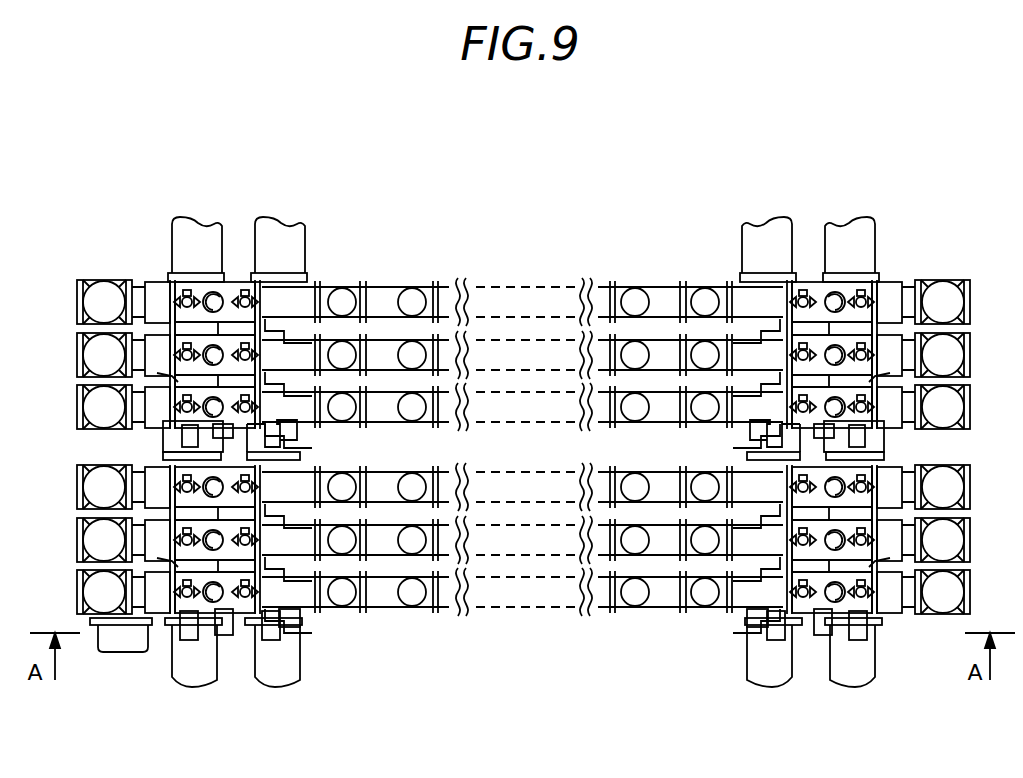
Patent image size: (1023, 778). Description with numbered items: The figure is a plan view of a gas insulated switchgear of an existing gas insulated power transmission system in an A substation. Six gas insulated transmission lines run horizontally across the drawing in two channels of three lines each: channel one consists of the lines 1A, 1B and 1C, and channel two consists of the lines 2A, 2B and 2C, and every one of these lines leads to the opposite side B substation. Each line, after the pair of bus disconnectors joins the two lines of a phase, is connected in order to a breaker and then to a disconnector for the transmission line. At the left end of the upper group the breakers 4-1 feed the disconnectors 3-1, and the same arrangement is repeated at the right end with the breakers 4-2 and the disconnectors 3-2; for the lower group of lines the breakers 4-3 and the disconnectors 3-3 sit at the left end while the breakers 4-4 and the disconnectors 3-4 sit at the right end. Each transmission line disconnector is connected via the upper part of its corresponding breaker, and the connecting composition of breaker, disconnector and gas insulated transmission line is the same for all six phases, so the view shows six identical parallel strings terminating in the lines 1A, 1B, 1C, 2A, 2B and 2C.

The line 1A is at (492, 288).
The line 1B is at (540, 350).
The line 1C is at (548, 410).
The line 2A is at (490, 473).
The line 2B is at (488, 550).
The line 2C is at (547, 597).
The disconnector for a transmission line 3-1 is at (221, 290).
The holding unit 3-2 is at (820, 288).
The holding unit 3-3 is at (216, 600).
The holding unit 3-4 is at (830, 602).
The breaker 4-1 is at (112, 282).
The roller unit 4-2 is at (934, 282).
The roller unit 4-3 is at (110, 606).
The roller unit 4-4 is at (945, 617).